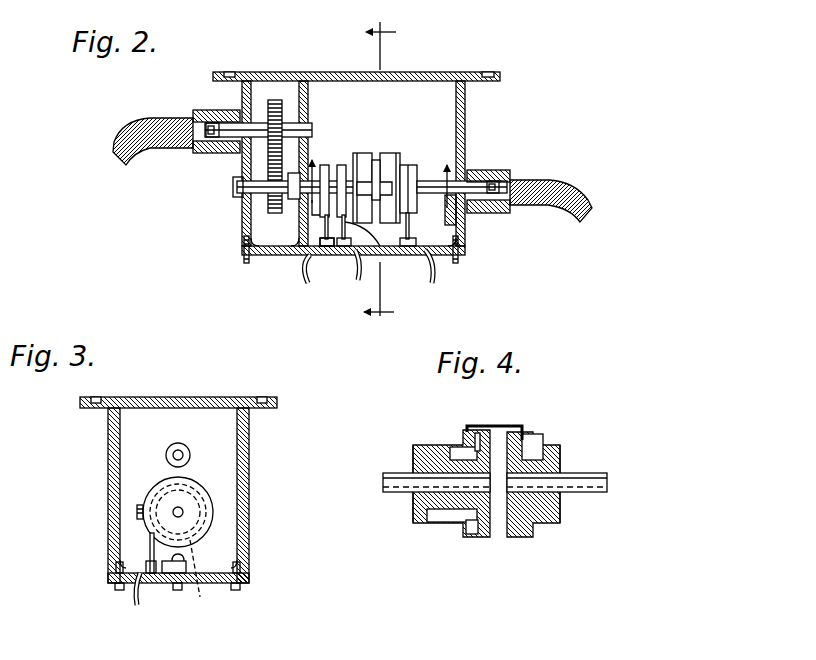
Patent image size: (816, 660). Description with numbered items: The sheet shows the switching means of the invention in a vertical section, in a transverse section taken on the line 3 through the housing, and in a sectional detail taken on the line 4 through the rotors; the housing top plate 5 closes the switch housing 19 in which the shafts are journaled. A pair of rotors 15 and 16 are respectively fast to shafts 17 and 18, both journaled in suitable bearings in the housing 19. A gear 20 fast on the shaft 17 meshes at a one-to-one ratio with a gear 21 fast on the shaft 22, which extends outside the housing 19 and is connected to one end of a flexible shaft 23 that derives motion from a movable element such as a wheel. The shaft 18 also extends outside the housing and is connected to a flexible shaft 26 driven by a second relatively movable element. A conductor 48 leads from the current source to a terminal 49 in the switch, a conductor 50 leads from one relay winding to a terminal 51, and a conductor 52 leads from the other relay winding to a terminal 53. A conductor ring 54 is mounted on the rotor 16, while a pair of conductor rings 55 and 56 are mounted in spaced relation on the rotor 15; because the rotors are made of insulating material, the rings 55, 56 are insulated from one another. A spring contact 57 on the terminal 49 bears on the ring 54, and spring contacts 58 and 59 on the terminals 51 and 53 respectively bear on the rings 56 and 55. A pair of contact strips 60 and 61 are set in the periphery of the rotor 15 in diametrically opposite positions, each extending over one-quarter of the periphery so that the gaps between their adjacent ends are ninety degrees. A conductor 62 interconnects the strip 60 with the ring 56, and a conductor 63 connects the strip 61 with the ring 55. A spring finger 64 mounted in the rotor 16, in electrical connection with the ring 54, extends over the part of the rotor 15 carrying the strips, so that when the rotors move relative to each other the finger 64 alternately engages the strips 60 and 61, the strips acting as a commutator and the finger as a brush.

In FIG. 2, the line 3— 3 is at (380, 174).
In FIG. 2, the line 4— 4 is at (379, 176).
In FIG. 2, the housing top plate 5 is at (446, 72).
In FIG. 2, the rotor 15 is at (358, 153).
In FIG. 3, the rotor 15 is at (206, 545).
In FIG. 4, the rotor 15 is at (410, 460).
In FIG. 2, the rotor 16 is at (396, 156).
In FIG. 4, the rotor 16 is at (521, 539).
In FIG. 2, the shaft 17 is at (240, 188).
In FIG. 3, the shaft 17 is at (181, 508).
In FIG. 4, the shaft 17 is at (398, 490).
In FIG. 2, the shaft 18 is at (452, 184).
In FIG. 4, the shaft 18 is at (585, 478).
In FIG. 2, the switch housing 19 is at (466, 116).
In FIG. 2, the gear 20 is at (288, 212).
In FIG. 2, the gear 21 is at (275, 100).
In FIG. 2, the shaft 22 is at (312, 127).
In FIG. 3, the shaft 22 is at (186, 449).
In FIG. 2, the flexible shaft 23 is at (180, 118).
In FIG. 2, the flexible shaft 26 is at (556, 190).
In FIG. 2, the conductor 48 is at (440, 275).
In FIG. 2, the terminal 49 is at (404, 265).
In FIG. 2, the conductor 50 is at (355, 265).
In FIG. 3, the conductor 50 is at (134, 598).
In FIG. 2, the terminal 51 is at (330, 256).
In FIG. 3, the terminal 51 is at (160, 583).
In FIG. 2, the conductor 52 is at (308, 283).
In FIG. 2, the terminal 53 is at (284, 255).
In FIG. 2, the conductor ring 54 is at (412, 166).
In FIG. 4, the conductor ring 54 is at (548, 452).
In FIG. 2, the conductor ring 55 is at (323, 165).
In FIG. 4, the conductor ring 55 is at (426, 445).
In FIG. 2, the conductor ring 56 is at (341, 165).
In FIG. 4, the conductor ring 56 is at (452, 447).
In FIG. 2, the spring contact 57 is at (445, 205).
In FIG. 2, the spring contact 58 is at (372, 248).
In FIG. 3, the spring contact 58 is at (150, 544).
In FIG. 2, the spring contact 59 is at (320, 212).
In FIG. 2, the contact strip 60 is at (378, 182).
In FIG. 3, the contact strip 60 is at (163, 486).
In FIG. 4, the contact strip 60 is at (495, 430).
In FIG. 2, the contact strip 61 is at (348, 217).
In FIG. 3, the contact strip 61 is at (204, 576).
In FIG. 4, the contact strip 61 is at (475, 537).
In FIG. 4, the conductor 62 is at (477, 432).
In FIG. 4, the conductor 63 is at (437, 522).
In FIG. 2, the spring finger 64 is at (403, 150).
In FIG. 3, the spring finger 64 is at (137, 508).
In FIG. 4, the spring finger 64 is at (527, 440).